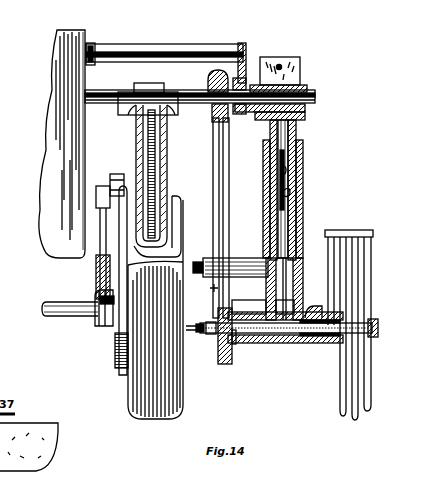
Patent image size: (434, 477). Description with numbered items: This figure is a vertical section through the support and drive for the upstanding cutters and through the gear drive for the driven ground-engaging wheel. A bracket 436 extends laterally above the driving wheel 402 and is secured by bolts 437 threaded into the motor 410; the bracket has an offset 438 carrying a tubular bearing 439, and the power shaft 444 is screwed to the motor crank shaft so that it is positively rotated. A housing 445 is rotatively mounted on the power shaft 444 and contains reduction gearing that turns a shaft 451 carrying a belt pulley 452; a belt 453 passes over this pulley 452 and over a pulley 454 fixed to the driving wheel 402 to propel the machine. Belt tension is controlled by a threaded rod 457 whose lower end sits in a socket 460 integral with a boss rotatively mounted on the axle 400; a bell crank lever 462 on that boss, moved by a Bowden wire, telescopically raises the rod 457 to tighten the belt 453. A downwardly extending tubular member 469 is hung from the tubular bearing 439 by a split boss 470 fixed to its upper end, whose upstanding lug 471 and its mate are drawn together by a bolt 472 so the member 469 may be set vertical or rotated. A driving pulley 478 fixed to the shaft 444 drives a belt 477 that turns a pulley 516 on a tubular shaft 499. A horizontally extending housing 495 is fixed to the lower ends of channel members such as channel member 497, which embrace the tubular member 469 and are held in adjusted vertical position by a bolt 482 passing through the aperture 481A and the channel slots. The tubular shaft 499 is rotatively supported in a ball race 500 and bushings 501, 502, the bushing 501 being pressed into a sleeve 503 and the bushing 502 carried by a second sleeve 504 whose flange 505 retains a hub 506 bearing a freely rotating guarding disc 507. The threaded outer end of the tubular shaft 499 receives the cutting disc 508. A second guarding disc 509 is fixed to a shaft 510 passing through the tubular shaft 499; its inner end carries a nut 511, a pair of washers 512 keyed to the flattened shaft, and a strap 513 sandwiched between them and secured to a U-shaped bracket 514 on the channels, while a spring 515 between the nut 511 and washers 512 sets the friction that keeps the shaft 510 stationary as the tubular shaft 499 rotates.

The axle 400 is at (69, 317).
The driving wheel 402 is at (183, 393).
The motor 410 is at (54, 74).
The bracket 436 is at (158, 50).
The bolts 437 is at (94, 52).
The offset 438 is at (246, 50).
The tubular bearing 439 is at (307, 87).
The power shaft 444 is at (107, 86).
The housing 445 is at (172, 190).
The shaft 451 is at (130, 176).
The belt pulley 452 is at (114, 176).
The belt 453 is at (98, 237).
The pulley 454 is at (114, 348).
The threaded rod 457 is at (96, 248).
The socket 460 is at (98, 303).
The bell crank lever 462 is at (100, 298).
The tubular member 469 is at (297, 134).
The boss 470 is at (304, 115).
The upstanding lug 471 is at (290, 62).
The bolt 472 is at (280, 64).
The belt 477 is at (229, 200).
The driving pulley 478 is at (206, 82).
The aperture 481A is at (288, 172).
The bolt 482 is at (291, 193).
The housing 495 is at (268, 344).
The channel member 497 is at (303, 232).
The tubular shaft 499 is at (258, 344).
The ball race 500 is at (248, 313).
The bushing 501 is at (310, 344).
The bushing 502 is at (323, 346).
The sleeve 503 is at (292, 312).
The second sleeve 504 is at (313, 316).
The flange 505 is at (336, 348).
The hub 506 is at (342, 348).
The guarding disc 507 is at (342, 412).
The cutting disc 508 is at (368, 414).
The second guarding disc 509 is at (359, 362).
The shaft 510 is at (376, 322).
The nut 511 is at (230, 338).
The washers 512 is at (218, 340).
The strap 513 is at (210, 290).
The U-shaped bracket 514 is at (239, 258).
The spring 515 is at (200, 322).
The pulley 516 is at (212, 338).